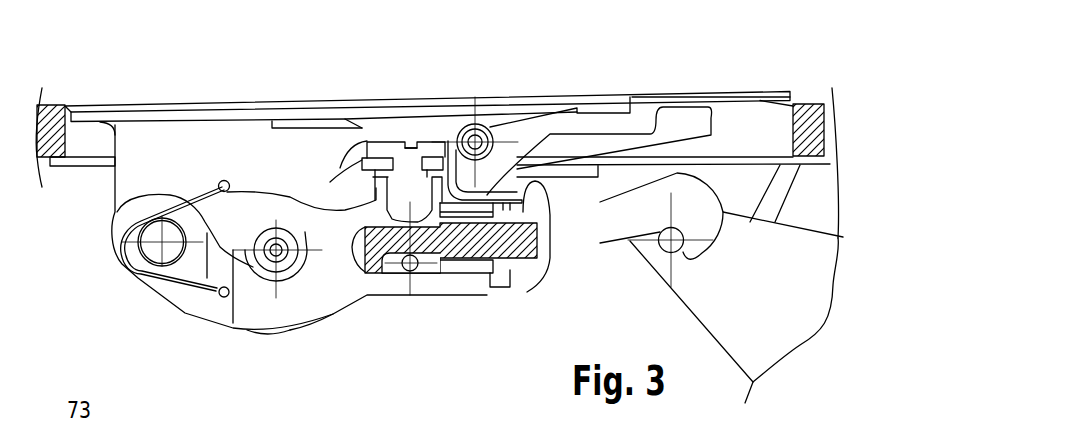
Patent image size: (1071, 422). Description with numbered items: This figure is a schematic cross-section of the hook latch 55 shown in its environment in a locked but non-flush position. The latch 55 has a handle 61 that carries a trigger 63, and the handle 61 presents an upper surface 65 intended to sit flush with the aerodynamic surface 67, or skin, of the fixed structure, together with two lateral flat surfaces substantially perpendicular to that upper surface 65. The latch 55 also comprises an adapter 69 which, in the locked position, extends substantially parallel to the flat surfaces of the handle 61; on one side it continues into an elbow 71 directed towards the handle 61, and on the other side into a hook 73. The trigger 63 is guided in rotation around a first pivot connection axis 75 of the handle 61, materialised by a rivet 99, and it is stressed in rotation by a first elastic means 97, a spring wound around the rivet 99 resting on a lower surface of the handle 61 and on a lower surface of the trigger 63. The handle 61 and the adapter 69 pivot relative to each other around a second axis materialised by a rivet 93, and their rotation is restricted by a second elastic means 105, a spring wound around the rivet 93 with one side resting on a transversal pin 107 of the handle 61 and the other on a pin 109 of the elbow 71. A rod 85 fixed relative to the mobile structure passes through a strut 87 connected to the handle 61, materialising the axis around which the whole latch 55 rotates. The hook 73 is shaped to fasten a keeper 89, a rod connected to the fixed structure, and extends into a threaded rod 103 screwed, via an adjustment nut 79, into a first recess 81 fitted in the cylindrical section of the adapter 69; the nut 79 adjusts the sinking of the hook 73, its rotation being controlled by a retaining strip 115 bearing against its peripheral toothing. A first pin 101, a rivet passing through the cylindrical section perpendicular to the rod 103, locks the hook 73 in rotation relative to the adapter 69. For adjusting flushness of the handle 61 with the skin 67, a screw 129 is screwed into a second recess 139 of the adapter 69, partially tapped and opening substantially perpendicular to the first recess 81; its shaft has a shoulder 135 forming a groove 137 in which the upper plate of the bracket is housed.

The latch 55 is at (88, 74).
The handle 61 is at (150, 157).
The trigger 63 is at (408, 139).
The upper surface 65 is at (97, 107).
The aerodynamic surface 67 is at (810, 103).
The adapter 69 is at (294, 339).
The elbow 71 is at (195, 300).
The hook 73 is at (734, 232).
The first pivot connection axis 75 is at (487, 140).
The nut 79 is at (514, 290).
The first recess 81 is at (355, 250).
The rod 85 is at (268, 227).
The strut 87 is at (298, 222).
The keeper 89 is at (661, 256).
The rivet 93 is at (144, 230).
The first elastic means 97 is at (558, 110).
The rivet 99 is at (468, 126).
The first pin 101 is at (418, 270).
The rod 103 is at (536, 246).
The second elastic means 105 is at (182, 284).
The transversal pin 107 is at (221, 182).
The pin 109 is at (221, 300).
The retaining strip 115 is at (518, 248).
The screw 129 is at (428, 129).
The shoulder 135 is at (357, 178).
The groove 137 is at (365, 157).
The second recess 139 is at (405, 270).